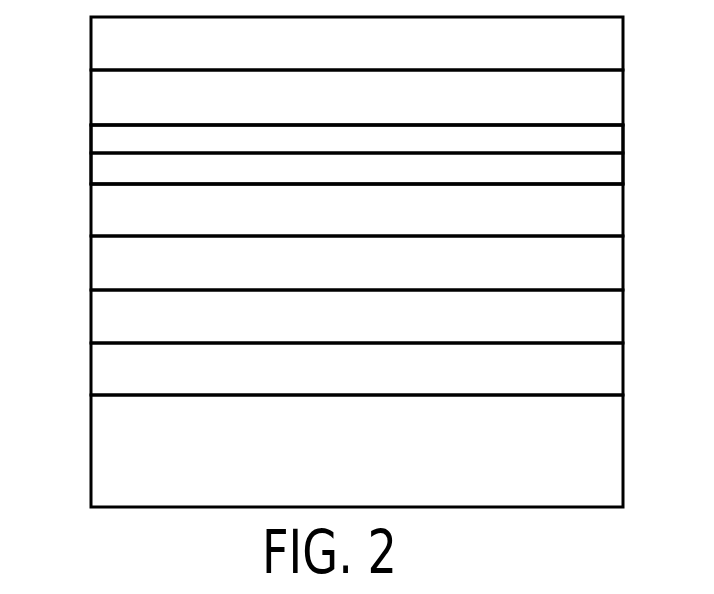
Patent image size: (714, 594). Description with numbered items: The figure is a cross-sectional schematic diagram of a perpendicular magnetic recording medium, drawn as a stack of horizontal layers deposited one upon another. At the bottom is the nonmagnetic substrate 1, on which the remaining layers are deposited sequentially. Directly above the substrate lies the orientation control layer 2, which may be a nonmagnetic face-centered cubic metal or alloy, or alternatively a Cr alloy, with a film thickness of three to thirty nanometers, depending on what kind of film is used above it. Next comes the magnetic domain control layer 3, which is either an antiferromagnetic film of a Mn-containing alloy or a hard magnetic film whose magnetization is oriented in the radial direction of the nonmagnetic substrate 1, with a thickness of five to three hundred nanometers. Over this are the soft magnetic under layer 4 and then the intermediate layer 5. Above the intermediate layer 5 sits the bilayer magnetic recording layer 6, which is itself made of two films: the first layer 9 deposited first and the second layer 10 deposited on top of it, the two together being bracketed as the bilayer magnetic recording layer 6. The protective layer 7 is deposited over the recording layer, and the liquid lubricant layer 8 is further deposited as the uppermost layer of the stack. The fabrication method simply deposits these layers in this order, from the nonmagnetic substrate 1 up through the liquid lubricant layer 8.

The nonmagnetic substrate 1 is at (608, 448).
The orientation control layer 2 is at (608, 362).
The magnetic domain control layer 3 is at (608, 307).
The soft magnetic under layer 4 is at (608, 252).
The intermediate layer 5 is at (608, 205).
The bilayer magnetic recording layer 6 is at (628, 125).
The protective layer 7 is at (608, 88).
The liquid lubricant layer 8 is at (608, 40).
The first layer of the bilayer magnetic recording layer 9 is at (102, 172).
The second layer of the bilayer magnetic recording layer 10 is at (102, 140).